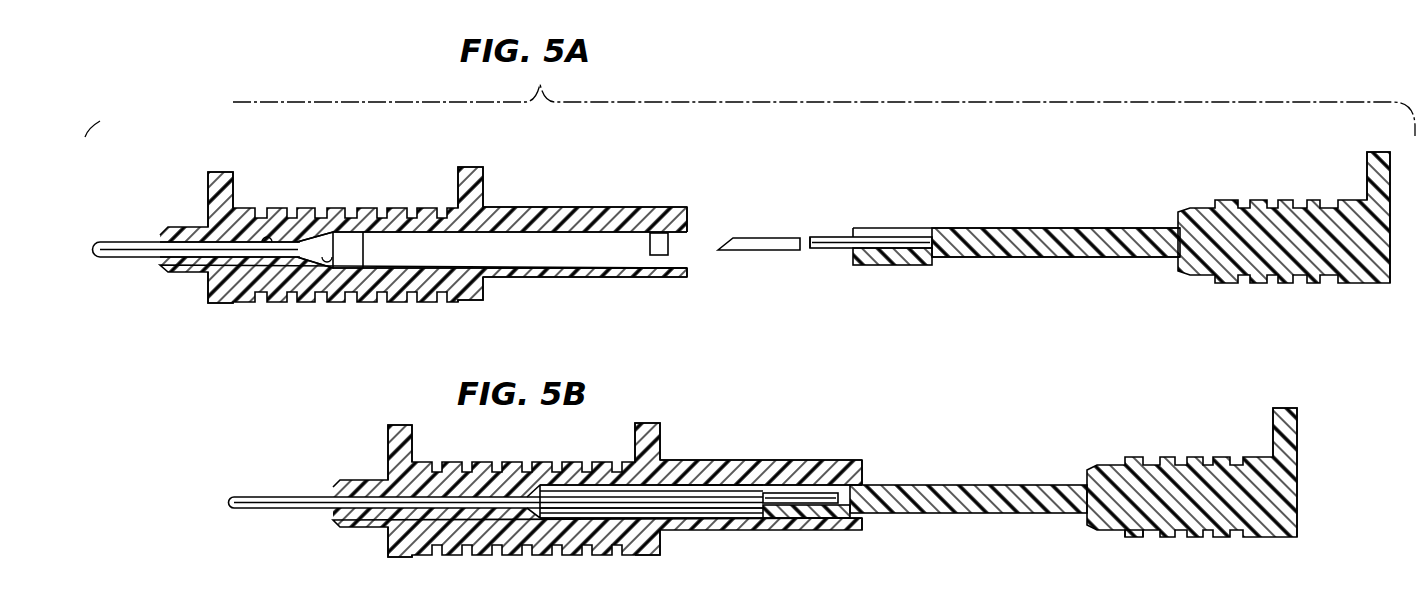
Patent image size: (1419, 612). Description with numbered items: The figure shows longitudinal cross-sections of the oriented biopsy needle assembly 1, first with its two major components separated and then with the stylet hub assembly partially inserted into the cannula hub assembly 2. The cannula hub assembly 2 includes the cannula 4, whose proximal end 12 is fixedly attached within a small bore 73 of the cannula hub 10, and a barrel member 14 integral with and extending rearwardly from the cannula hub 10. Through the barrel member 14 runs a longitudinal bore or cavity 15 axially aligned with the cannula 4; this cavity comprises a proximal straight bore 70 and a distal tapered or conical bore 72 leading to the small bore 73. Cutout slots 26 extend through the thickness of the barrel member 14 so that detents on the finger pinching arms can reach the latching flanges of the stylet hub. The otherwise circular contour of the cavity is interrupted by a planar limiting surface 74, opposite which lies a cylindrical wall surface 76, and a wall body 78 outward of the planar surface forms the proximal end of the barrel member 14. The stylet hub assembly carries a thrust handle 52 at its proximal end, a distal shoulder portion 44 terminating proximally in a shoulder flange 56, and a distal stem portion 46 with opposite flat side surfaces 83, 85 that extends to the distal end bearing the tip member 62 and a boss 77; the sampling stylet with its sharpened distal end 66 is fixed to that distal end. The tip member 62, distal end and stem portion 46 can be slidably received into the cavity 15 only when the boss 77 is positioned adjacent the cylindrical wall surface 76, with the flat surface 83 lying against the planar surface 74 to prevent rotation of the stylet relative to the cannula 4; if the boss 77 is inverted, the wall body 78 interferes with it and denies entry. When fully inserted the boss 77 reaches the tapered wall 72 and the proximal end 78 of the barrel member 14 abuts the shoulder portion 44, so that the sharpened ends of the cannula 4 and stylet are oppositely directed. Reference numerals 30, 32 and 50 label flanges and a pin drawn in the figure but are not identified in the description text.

In FIG. 5A, the oriented biopsy needle assembly 1 is at (818, 150).
In FIG. 5B, the oriented biopsy needle assembly 1 is at (885, 418).
In FIG. 5A, the cannula hub assembly 2 is at (176, 328).
In FIG. 5B, the cannula hub assembly 2 is at (345, 548).
In FIG. 5A, the cannula 4 is at (123, 248).
In FIG. 5B, the cannula 4 is at (496, 502).
In FIG. 5A, the cannula hub 10 is at (384, 322).
In FIG. 5B, the cannula hub 10 is at (510, 566).
In FIG. 5A, the proximal end of the cannula 12 is at (261, 244).
In FIG. 5B, the barrel member 14 is at (735, 525).
In FIG. 5A, the longitudinal bore or cavity 15 is at (395, 252).
In FIG. 5A, the cutout slot 26 is at (660, 240).
In FIG. 5A, the rear flange 30 is at (215, 176).
In FIG. 5B, the rear flange 30 is at (388, 438).
In FIG. 5A, the front flange 32 is at (472, 181).
In FIG. 5B, the front flange 32 is at (655, 428).
In FIG. 5A, the distal shoulder portion 44 is at (1180, 266).
In FIG. 5B, the distal shoulder portion 44 is at (1093, 529).
In FIG. 5A, the distal stem portion 46 is at (1050, 251).
In FIG. 5B, the distal stem portion 46 is at (985, 500).
In FIG. 5A, the ferrule pin 50 is at (897, 238).
In FIG. 5B, the ferrule pin 50 is at (800, 493).
In FIG. 5A, the thrust handle 52 is at (1372, 165).
In FIG. 5B, the thrust handle 52 is at (1278, 420).
In FIG. 5B, the shoulder flange 56 is at (1132, 537).
In FIG. 5A, the tip member 62 is at (858, 255).
In FIG. 5A, the stylet distal end 66 is at (735, 240).
In FIG. 5A, the proximal straight bore 70 is at (684, 238).
In FIG. 5A, the distal tapered or conical bore 72 is at (303, 270).
In FIG. 5A, the small bore 73 is at (268, 258).
In FIG. 5A, the planar limiting surface 74 is at (558, 240).
In FIG. 5B, the planar limiting surface 74 is at (735, 490).
In FIG. 5A, the cylindrical wall surface 76 is at (592, 262).
In FIG. 5A, the boss 77 is at (872, 263).
In FIG. 5B, the boss 77 is at (775, 516).
In FIG. 5A, the proximal end of barrel member 78 is at (690, 276).
In FIG. 5B, the proximal end of barrel member 78 is at (865, 470).
In FIG. 5A, the flat side surface 83 is at (985, 228).
In FIG. 5A, the flat side surface 85 is at (965, 258).